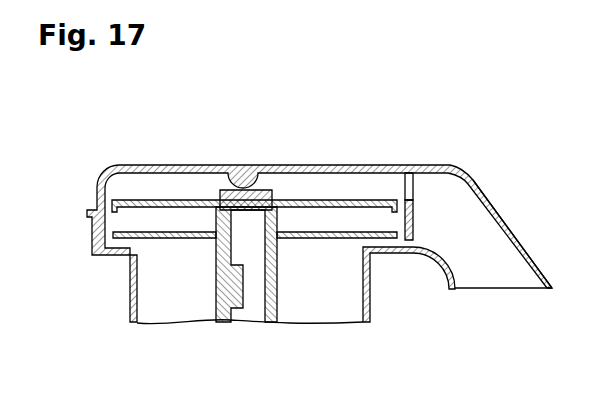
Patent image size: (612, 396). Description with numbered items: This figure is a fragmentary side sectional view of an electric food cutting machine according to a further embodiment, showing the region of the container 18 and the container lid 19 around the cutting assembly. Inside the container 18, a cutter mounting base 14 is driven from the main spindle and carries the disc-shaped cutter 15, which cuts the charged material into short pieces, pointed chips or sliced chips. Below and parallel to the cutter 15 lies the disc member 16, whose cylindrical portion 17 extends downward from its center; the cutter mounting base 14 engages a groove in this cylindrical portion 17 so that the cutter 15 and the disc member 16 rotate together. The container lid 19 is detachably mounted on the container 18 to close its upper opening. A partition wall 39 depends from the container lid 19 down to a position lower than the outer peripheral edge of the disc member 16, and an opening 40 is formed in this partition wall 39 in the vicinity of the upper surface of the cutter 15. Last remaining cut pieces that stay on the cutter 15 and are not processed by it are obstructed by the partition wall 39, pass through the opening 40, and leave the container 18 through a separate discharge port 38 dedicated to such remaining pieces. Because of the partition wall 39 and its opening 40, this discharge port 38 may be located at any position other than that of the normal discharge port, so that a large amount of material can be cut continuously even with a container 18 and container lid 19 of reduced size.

The cutter mounting base 14 is at (243, 208).
The cutter 15 is at (338, 200).
The disc member 16 is at (312, 238).
The cylindrical portion 17 is at (273, 285).
The container 18 is at (370, 285).
The container lid 19 is at (315, 168).
The discharge port 38 is at (506, 290).
The partition wall 39 is at (413, 217).
The opening 40 is at (409, 185).